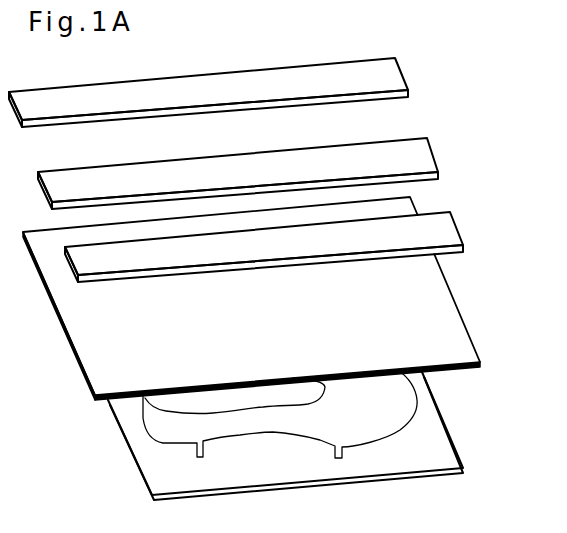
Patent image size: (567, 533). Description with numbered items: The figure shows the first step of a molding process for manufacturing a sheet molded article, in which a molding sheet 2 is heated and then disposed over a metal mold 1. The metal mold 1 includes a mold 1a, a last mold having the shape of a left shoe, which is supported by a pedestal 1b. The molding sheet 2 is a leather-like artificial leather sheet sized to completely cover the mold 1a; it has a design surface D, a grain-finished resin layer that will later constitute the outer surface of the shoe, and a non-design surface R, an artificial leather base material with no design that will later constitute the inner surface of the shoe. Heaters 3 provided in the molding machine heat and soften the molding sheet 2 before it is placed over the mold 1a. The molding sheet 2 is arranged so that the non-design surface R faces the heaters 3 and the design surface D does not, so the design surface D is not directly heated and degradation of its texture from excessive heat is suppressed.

The metal mold 1 is at (262, 436).
The mold 1a is at (140, 427).
The pedestal 1b is at (152, 468).
The molding sheet 2 is at (85, 348).
The heater 3 is at (399, 80).
The non-design surface R is at (460, 323).
The design surface D is at (466, 374).